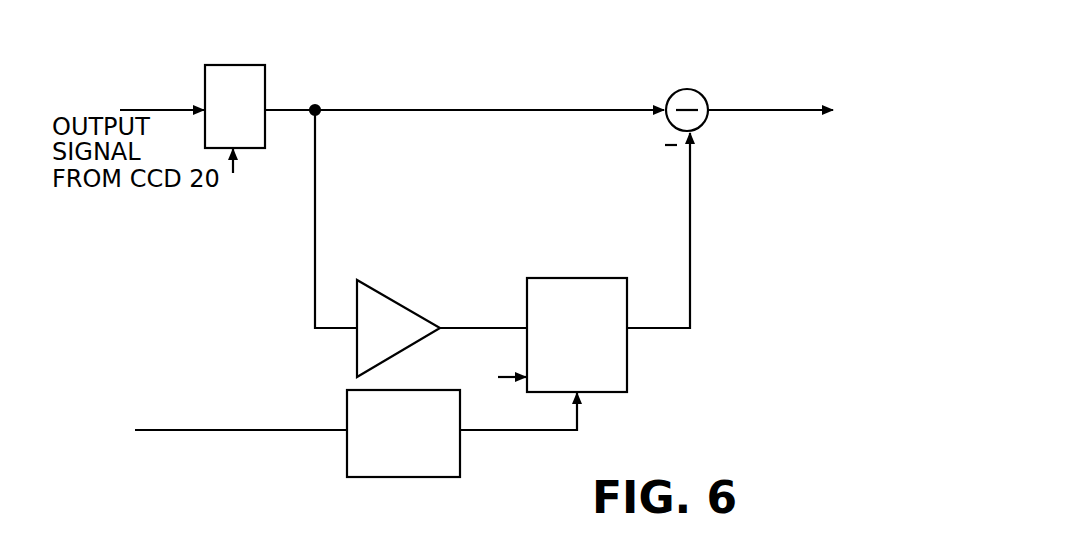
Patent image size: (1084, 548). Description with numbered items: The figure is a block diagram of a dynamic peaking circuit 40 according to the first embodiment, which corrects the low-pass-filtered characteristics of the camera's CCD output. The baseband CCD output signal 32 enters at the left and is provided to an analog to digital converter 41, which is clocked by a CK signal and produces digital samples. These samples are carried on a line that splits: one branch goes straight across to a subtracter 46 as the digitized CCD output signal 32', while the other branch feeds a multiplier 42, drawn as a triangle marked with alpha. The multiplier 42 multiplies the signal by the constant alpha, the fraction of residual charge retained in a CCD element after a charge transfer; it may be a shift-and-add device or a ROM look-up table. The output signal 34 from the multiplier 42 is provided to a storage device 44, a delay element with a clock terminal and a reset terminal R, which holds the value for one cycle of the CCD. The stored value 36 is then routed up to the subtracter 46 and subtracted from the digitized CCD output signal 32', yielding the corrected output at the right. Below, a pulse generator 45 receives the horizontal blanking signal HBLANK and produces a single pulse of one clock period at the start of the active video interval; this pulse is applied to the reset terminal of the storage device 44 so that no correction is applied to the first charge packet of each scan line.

The baseband CCD output signal 32 is at (162, 84).
The analog to digital converter 41 is at (241, 65).
The dynamic peaking circuit 40 is at (497, 57).
The digitized CCD output signal 32' is at (464, 93).
The subtracter 46 is at (698, 92).
The multiplier 42 is at (393, 300).
The output signal 34 is at (468, 328).
The storage device 44 is at (592, 278).
The value 36 is at (690, 248).
The pulse generator 45 is at (432, 390).